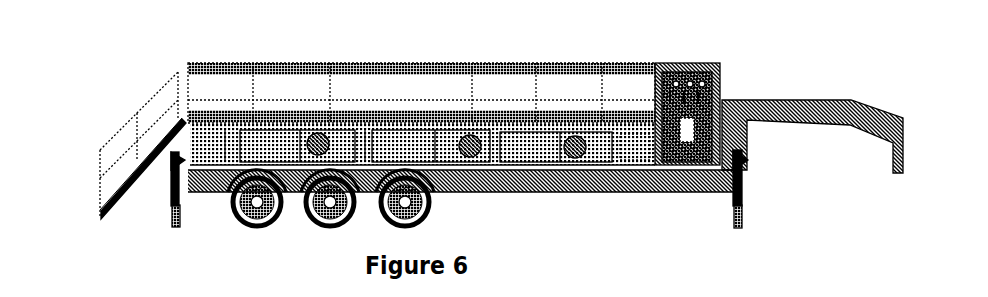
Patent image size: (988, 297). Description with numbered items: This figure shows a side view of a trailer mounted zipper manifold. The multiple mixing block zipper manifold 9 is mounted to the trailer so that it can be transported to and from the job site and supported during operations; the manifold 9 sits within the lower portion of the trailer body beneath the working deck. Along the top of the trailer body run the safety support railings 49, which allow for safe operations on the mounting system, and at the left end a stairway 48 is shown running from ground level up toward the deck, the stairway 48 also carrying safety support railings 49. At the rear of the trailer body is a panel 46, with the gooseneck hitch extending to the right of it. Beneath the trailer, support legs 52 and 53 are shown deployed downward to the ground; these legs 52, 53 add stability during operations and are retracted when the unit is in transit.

The multiple mixing block zipper manifold 9 is at (520, 146).
The control panel 46 is at (706, 57).
The stairway 48 is at (86, 173).
The safety support railings 49 is at (229, 66).
The support leg 52 is at (745, 212).
The support leg 53 is at (184, 207).